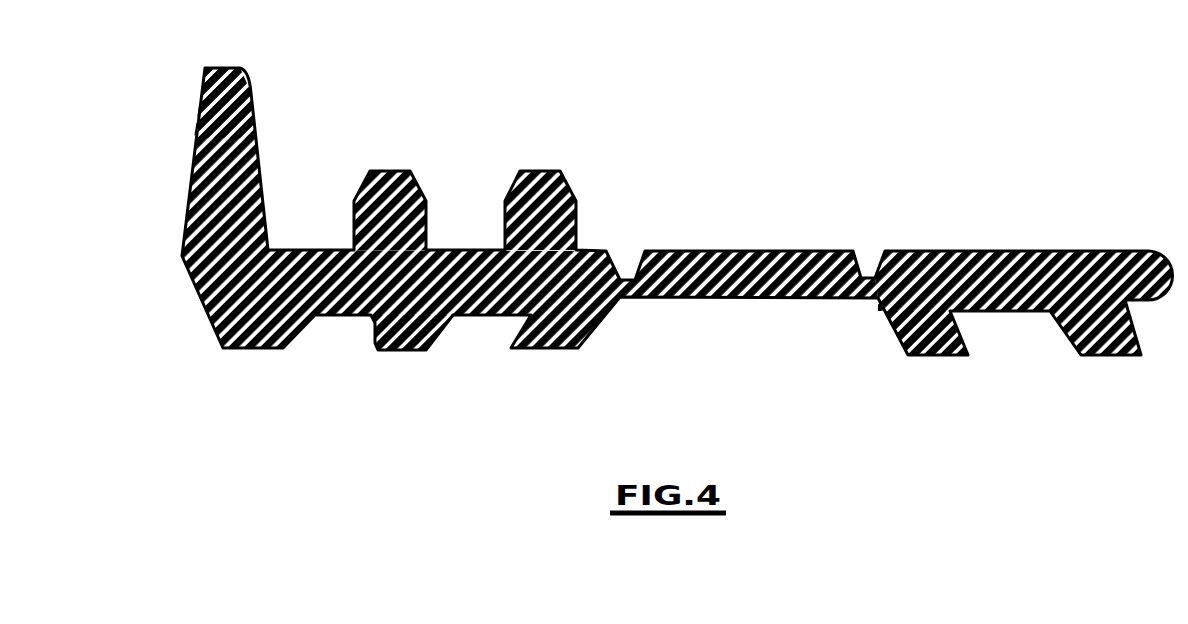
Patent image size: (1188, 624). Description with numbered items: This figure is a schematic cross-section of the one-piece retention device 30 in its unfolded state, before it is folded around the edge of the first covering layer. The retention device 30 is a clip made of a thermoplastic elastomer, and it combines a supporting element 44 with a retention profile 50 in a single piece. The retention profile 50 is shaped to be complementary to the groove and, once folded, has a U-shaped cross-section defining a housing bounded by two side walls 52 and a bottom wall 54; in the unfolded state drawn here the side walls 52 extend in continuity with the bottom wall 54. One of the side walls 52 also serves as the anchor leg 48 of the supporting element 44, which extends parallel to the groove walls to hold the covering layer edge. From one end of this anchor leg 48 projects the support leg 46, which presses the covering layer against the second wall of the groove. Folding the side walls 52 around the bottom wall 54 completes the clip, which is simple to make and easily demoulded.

The retention device 30 is at (1008, 176).
The supporting element 44 is at (253, 168).
The support leg 46 is at (190, 95).
The anchor leg 48 is at (487, 272).
The retention profile 50 is at (798, 272).
The side walls 52 is at (428, 275).
The bottom wall 54 is at (729, 270).